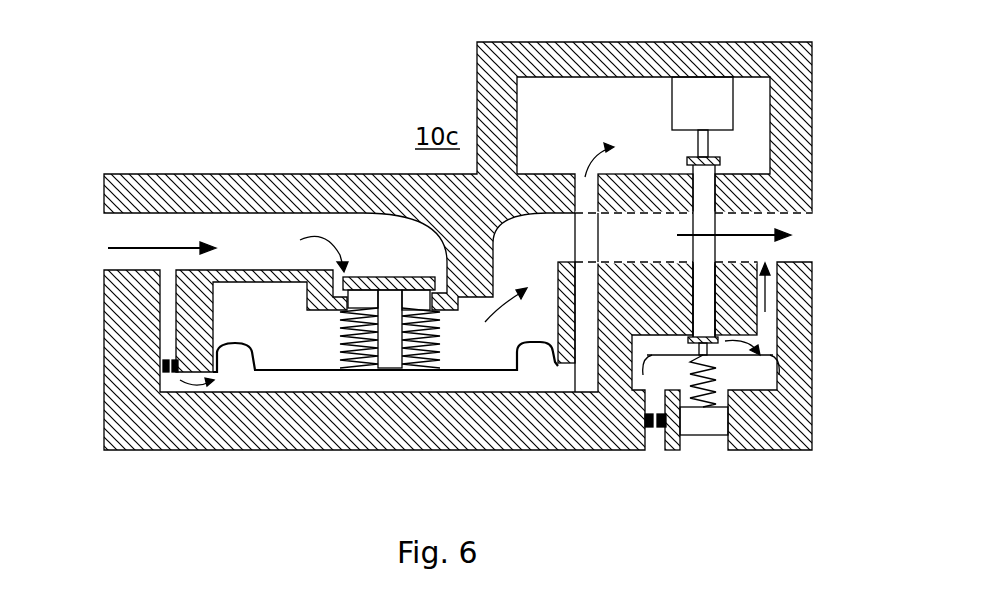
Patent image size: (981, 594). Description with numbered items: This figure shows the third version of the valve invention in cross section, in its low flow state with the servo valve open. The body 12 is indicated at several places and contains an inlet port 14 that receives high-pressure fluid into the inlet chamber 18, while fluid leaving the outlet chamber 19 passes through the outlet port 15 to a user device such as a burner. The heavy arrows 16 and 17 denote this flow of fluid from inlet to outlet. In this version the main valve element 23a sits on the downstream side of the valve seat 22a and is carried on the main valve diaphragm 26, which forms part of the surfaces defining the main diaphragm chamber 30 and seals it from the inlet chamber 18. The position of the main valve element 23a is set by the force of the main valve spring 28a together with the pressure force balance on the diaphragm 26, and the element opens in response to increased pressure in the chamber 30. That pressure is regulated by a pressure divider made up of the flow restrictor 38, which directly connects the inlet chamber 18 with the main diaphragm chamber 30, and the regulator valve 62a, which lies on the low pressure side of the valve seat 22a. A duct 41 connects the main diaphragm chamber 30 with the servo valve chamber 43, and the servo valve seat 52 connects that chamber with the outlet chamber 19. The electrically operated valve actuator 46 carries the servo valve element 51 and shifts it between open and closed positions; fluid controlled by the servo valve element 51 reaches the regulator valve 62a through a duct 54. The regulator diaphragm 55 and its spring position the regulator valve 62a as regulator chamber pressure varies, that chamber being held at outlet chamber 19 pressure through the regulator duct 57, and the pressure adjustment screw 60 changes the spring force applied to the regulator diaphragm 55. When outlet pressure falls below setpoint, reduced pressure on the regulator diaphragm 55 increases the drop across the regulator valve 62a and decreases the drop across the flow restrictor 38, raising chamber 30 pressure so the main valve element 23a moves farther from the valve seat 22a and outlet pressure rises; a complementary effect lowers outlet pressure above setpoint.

The body 12 is at (233, 180).
The inlet port 14 is at (118, 235).
The outlet port 15 is at (810, 245).
The heavy arrow 16 is at (150, 245).
The heavy arrow 17 is at (827, 203).
The inlet chamber 18 is at (227, 232).
The outlet chamber 19 is at (826, 166).
The valve seat 22a is at (420, 275).
The main valve element 23a is at (342, 312).
The main valve diaphragm 26 is at (460, 372).
The main valve spring 28a is at (350, 333).
The main diaphragm chamber 30 is at (245, 385).
The flow restrictor 38 is at (163, 368).
The duct 41 is at (592, 250).
The servo valve chamber 43 is at (610, 102).
The valve actuator 46 is at (715, 107).
The servo valve element 51 is at (718, 160).
The servo valve seat 52 is at (707, 168).
The duct 54 is at (703, 295).
The regulator diaphragm 55 is at (800, 380).
The regulator duct 57 is at (772, 325).
The pressure adjustment screw 60 is at (713, 433).
The regulator valve 62a is at (722, 341).